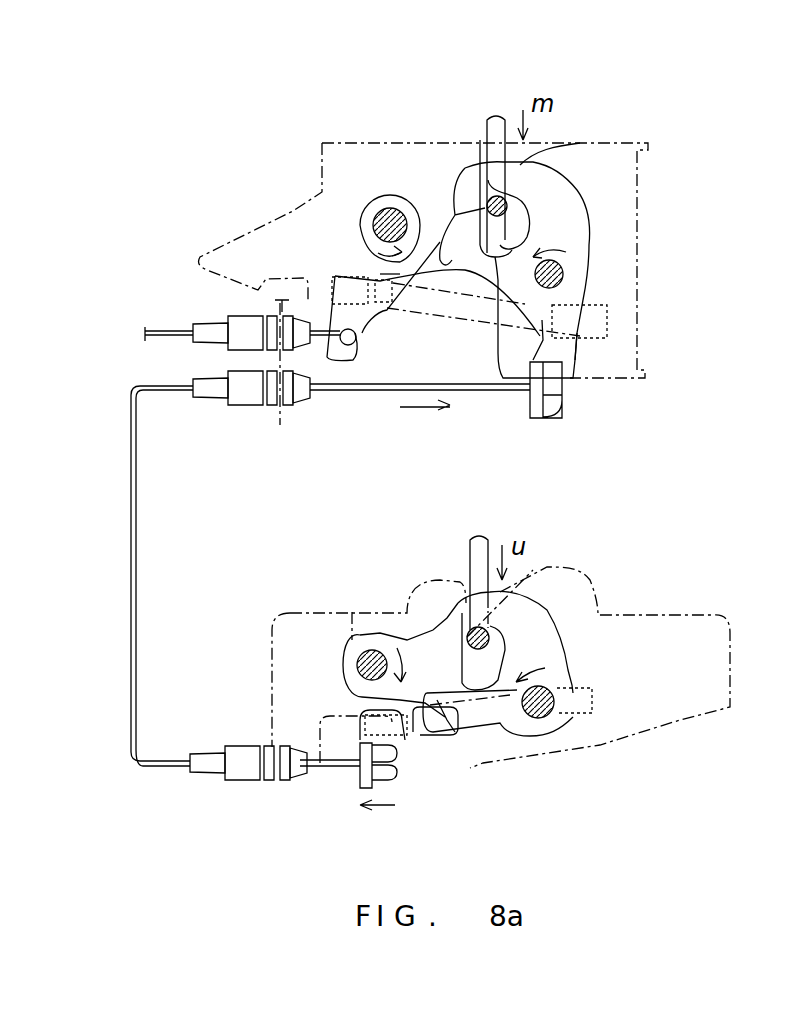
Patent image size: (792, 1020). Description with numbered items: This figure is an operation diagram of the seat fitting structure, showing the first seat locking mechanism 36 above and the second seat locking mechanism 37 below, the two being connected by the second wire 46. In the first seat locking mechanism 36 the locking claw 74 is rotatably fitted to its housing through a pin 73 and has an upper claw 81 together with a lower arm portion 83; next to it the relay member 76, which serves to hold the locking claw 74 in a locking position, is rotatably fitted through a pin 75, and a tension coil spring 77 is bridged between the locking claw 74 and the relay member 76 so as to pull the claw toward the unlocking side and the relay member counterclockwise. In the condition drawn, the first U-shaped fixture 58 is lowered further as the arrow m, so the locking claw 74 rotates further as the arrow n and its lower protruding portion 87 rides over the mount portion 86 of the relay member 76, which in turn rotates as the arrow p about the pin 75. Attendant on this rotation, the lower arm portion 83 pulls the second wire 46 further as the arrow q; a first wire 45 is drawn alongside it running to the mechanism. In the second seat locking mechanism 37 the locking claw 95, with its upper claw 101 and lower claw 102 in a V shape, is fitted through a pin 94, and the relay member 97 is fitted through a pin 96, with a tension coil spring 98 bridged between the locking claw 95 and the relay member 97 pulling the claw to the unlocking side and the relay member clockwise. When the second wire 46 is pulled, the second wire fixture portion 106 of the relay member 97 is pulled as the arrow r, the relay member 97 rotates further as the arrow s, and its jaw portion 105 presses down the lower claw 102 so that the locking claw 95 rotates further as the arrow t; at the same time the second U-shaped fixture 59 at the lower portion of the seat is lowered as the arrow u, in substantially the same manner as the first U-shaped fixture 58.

The first seat locking mechanism 36 is at (312, 130).
The second seat locking mechanism 37 is at (292, 598).
The first cable 45 is at (167, 320).
The second wire 46 is at (340, 393).
The first U-shaped fixture 58 is at (486, 135).
The second U-shaped fixture 59 is at (467, 563).
The pin 73 is at (565, 265).
The locking claw 74 is at (588, 198).
The pin 75 is at (363, 235).
The relay member 76 is at (365, 213).
The tension coil spring 77 is at (498, 327).
The upper claw 81 is at (573, 141).
The lower arm portion 83 is at (578, 361).
The mount portion 86 is at (462, 165).
The lower protruding portion 87 is at (430, 283).
The pin 94 is at (542, 697).
The locking claw 95 is at (565, 610).
The pin 96 is at (343, 657).
The relay member 97 is at (375, 633).
The tension coil spring 98 is at (563, 725).
The upper claw 101 is at (494, 648).
The lower claw 102 is at (500, 723).
The jaw portion 105 is at (470, 733).
The second wire fixture portion 106 is at (400, 772).